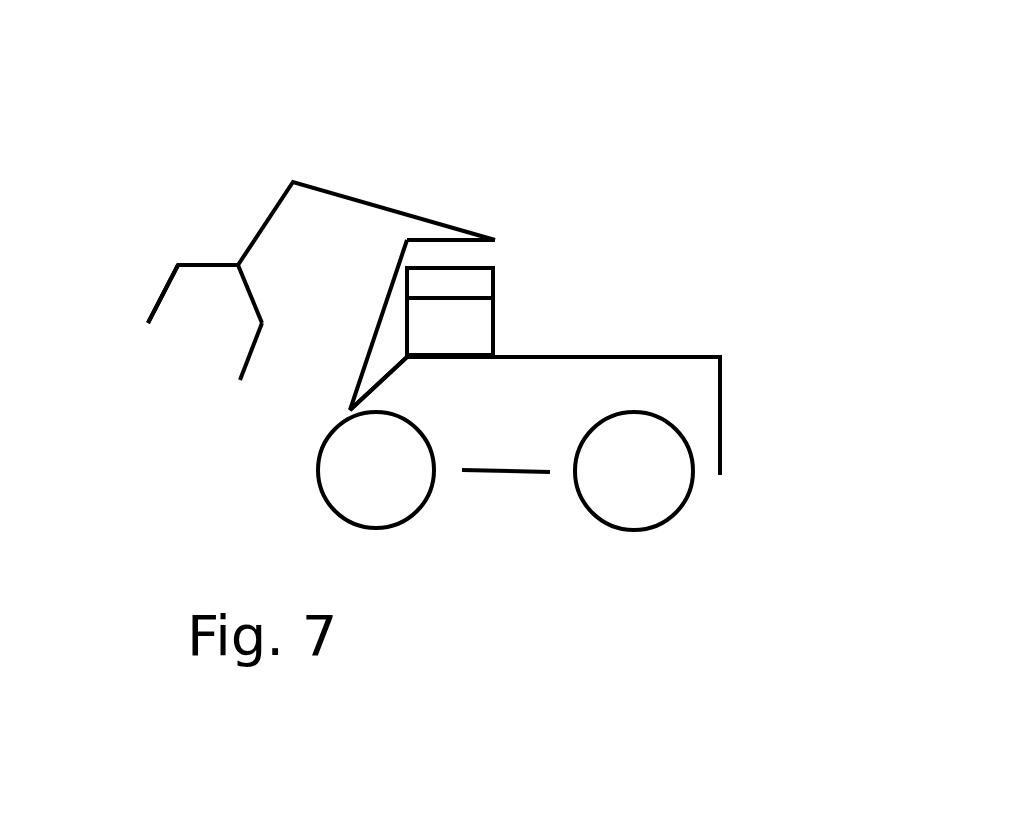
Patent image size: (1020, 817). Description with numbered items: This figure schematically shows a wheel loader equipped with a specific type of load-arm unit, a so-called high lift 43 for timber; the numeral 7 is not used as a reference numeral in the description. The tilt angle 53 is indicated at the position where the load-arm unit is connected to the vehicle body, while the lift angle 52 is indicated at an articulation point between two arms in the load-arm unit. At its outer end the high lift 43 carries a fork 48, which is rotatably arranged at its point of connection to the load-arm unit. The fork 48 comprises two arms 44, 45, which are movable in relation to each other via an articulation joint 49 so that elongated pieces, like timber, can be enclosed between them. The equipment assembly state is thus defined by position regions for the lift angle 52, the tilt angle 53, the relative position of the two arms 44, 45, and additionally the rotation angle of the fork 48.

The vehicle 7 is at (805, 320).
The high lift 43 is at (288, 138).
The arm 44 is at (161, 298).
The arm 45 is at (243, 356).
The fork 48 is at (138, 255).
The articulation joint 49 is at (252, 270).
The lift angle 52 is at (508, 232).
The tilt angle 53 is at (337, 397).